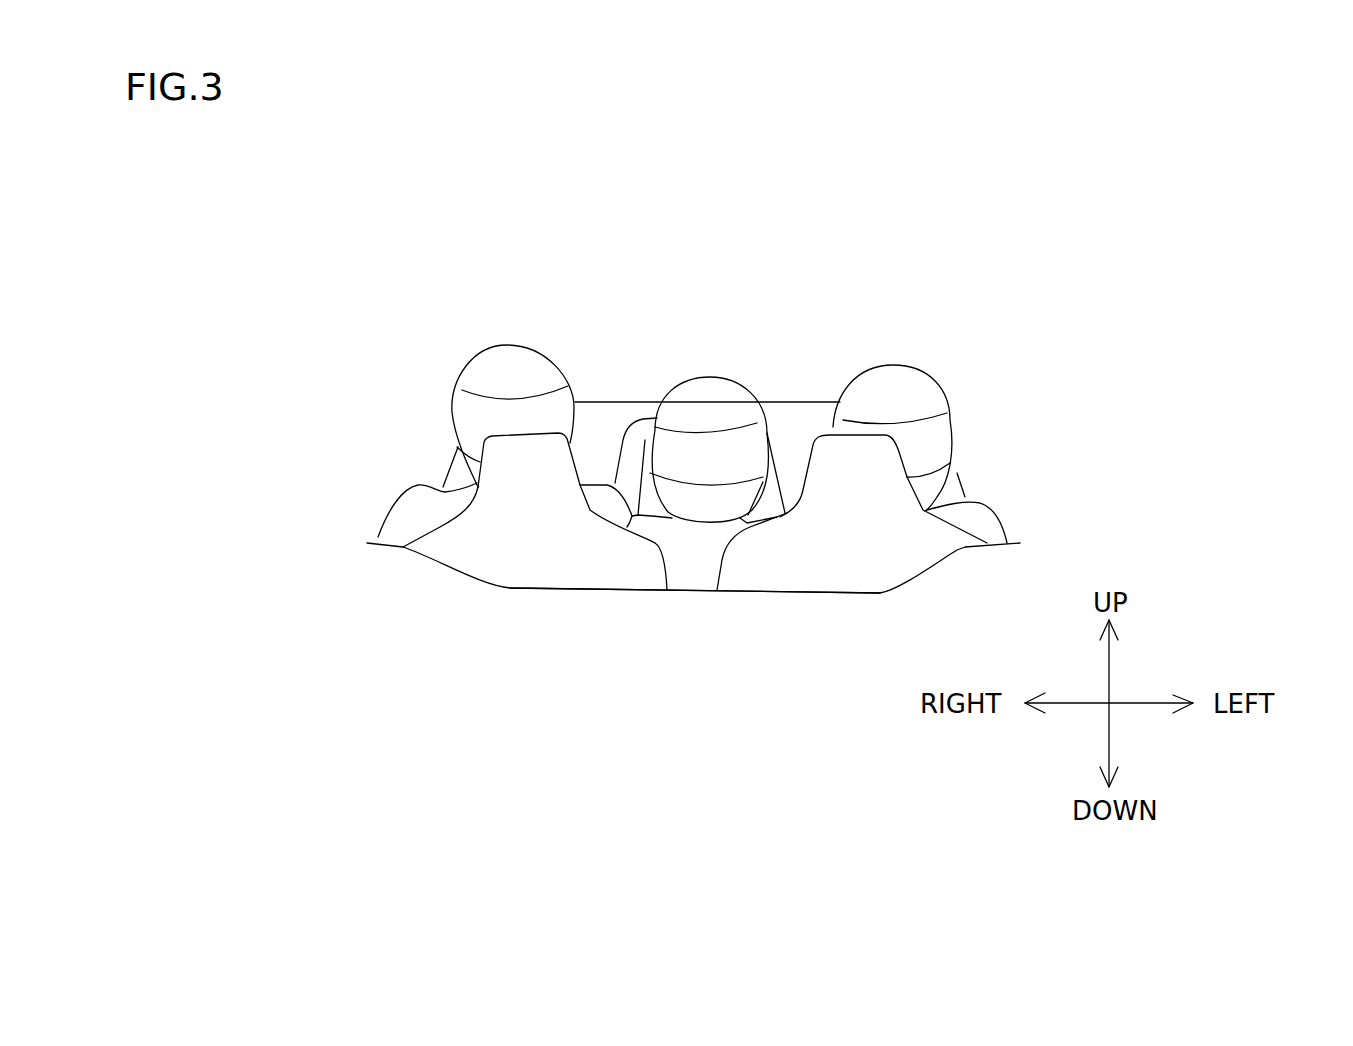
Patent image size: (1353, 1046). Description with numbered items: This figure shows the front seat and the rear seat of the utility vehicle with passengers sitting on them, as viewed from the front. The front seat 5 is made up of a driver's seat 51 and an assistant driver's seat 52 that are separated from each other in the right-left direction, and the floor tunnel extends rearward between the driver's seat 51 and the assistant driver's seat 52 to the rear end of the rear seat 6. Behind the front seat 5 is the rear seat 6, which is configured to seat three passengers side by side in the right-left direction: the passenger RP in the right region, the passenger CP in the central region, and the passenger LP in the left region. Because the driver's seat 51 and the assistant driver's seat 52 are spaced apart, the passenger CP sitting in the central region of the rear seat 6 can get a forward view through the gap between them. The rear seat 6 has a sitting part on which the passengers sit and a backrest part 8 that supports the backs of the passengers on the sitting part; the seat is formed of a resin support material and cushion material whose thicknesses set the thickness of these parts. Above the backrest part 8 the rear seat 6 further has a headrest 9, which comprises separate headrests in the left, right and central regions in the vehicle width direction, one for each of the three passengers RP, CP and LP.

The rear seat 6 is at (440, 450).
The passenger RP is at (507, 377).
The passenger CP is at (693, 387).
The passenger LP is at (890, 375).
The backrest part 8 is at (798, 497).
The headrest 9 is at (958, 480).
The front seat 5 is at (658, 787).
The assistant driver's seat 52 is at (622, 568).
The driver's seat 51 is at (775, 563).